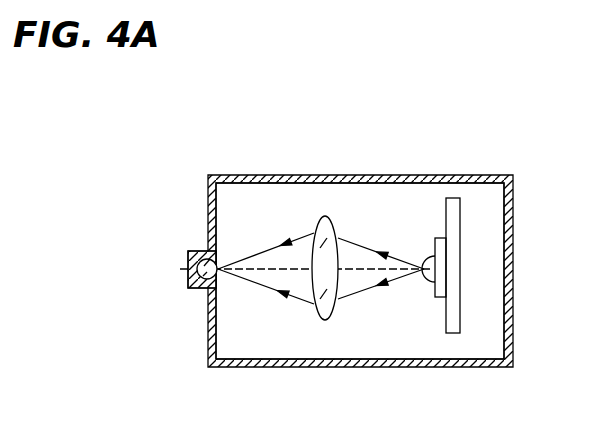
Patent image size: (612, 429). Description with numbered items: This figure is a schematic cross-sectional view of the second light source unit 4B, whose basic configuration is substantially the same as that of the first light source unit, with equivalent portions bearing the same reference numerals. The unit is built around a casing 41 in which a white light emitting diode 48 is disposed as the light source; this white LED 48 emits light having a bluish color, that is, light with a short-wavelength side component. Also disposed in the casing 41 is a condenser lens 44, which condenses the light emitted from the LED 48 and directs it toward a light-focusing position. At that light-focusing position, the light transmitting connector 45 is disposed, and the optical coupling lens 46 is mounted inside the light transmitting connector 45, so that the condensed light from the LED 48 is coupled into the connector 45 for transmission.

The second light source unit 4B is at (493, 171).
The casing 41 is at (398, 176).
The condenser lens 44 is at (324, 321).
The light transmitting connector 45 is at (203, 251).
The optical coupling lens 46 is at (200, 289).
The white light emitting diode (LED) 48 is at (440, 297).